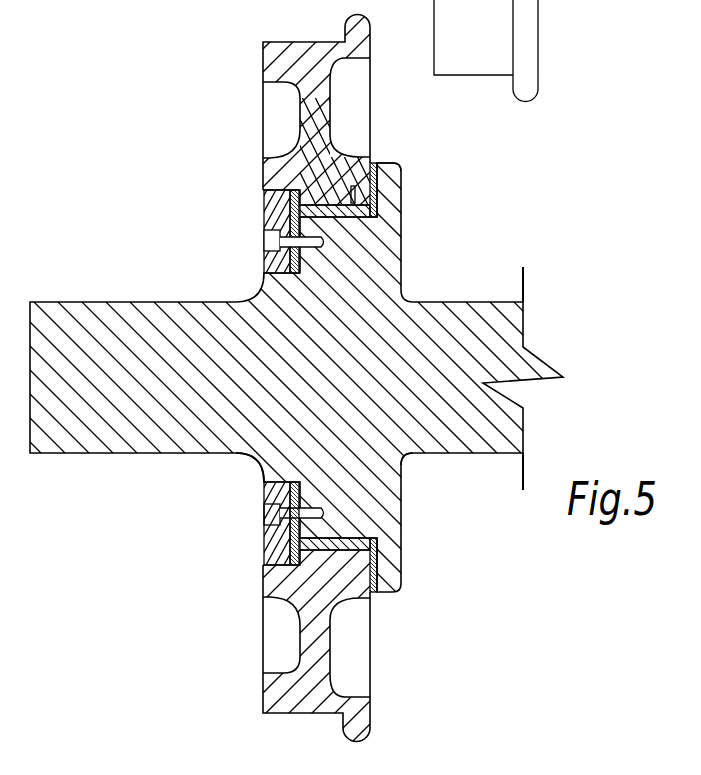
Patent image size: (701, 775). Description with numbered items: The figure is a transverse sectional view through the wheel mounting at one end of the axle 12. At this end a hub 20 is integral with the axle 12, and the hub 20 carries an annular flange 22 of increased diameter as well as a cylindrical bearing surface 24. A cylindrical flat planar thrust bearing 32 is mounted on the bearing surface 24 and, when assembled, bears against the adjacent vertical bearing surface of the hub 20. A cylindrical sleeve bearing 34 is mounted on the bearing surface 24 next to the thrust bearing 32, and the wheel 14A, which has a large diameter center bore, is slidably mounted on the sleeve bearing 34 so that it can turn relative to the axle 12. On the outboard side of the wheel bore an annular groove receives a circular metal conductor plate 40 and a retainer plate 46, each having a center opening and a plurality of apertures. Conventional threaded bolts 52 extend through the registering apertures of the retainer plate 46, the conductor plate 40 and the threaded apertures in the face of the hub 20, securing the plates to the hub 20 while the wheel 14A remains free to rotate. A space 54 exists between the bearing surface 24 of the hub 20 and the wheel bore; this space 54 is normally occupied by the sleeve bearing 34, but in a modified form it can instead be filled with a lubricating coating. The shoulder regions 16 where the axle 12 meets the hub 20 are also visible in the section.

The axle 12 is at (474, 300).
The wheel 14A is at (273, 73).
The shoulder 16 is at (250, 466).
The hub 20 is at (290, 155).
The annular flange 22 is at (396, 165).
The cylindrical bearing surface 24 is at (290, 605).
The thrust bearing 32 is at (373, 165).
The sleeve bearing 34 is at (300, 124).
The conductor plate 40 is at (295, 213).
The retainer plate 46 is at (264, 188).
The threaded bolts 52 is at (270, 242).
The space 54 is at (353, 188).